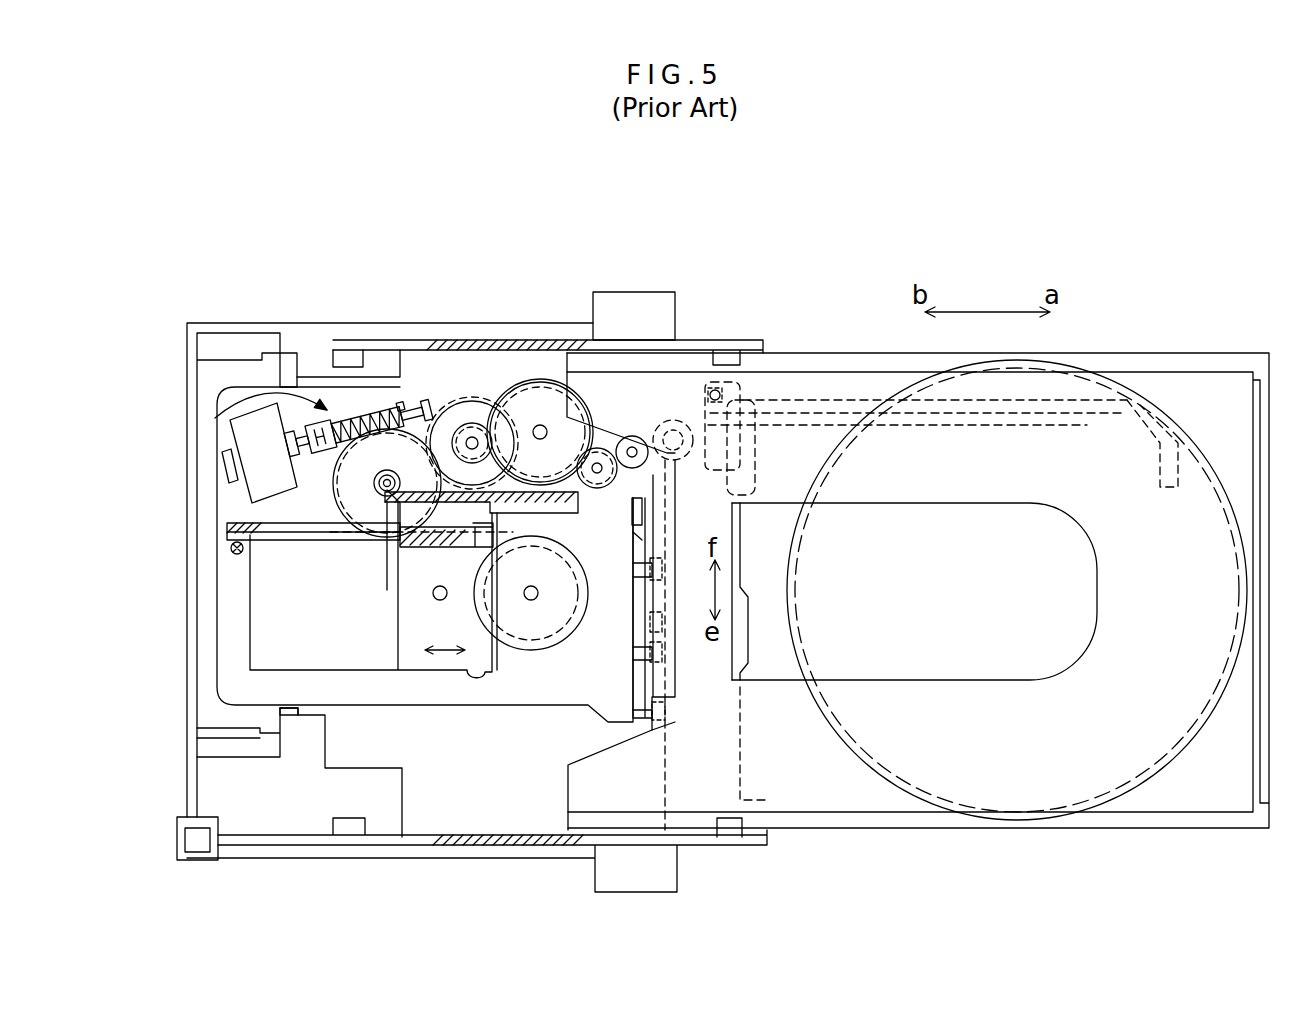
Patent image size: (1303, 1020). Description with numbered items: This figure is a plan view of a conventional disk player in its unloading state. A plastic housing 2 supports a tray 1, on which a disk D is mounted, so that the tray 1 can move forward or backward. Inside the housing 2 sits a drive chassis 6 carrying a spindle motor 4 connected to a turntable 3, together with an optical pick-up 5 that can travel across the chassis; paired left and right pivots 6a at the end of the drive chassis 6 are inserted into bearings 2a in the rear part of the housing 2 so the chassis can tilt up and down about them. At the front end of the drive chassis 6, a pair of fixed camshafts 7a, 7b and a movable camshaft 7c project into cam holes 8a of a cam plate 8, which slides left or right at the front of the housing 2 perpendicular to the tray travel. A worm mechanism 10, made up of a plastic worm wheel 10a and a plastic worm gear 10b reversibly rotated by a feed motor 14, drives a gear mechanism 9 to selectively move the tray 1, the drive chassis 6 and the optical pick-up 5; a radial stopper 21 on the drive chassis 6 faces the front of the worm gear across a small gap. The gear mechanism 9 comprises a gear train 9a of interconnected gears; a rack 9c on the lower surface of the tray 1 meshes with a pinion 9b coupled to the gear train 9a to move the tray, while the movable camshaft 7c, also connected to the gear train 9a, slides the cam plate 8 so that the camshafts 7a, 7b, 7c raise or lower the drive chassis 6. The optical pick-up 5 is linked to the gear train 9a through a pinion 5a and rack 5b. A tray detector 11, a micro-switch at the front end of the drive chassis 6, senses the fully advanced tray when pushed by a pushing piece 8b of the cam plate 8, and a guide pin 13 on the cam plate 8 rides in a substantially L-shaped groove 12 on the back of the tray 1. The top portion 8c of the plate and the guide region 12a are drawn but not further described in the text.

The tray 1 is at (818, 820).
The housing 2 is at (440, 855).
The bearings 2a is at (307, 353).
The turntable 3 is at (545, 648).
The spindle motor 4 is at (513, 622).
The optical pick-up 5 is at (398, 628).
The pinion 5a is at (370, 500).
The rack 5b is at (420, 495).
The drive chassis 6 is at (450, 697).
The pivots 6a is at (287, 367).
The fixed camshaft 7a is at (647, 720).
The fixed camshaft 7b is at (640, 578).
The movable camshaft 7c is at (645, 655).
The cam plate 8 is at (663, 670).
The cam holes 8a is at (652, 622).
The pushing piece 8b is at (695, 505).
The holder top portion 8c is at (634, 316).
The gear mechanism 9 is at (828, 240).
The gear train 9a is at (665, 430).
The pinion 9b is at (697, 400).
The rack 9c is at (796, 405).
The worm mechanism 10 is at (113, 385).
The worm wheel 10a is at (343, 493).
The worm gear 10b is at (245, 395).
The tray detector 11 is at (632, 527).
The groove 12 is at (1170, 490).
The guide portion 12a is at (916, 439).
The guide pin 13 is at (717, 388).
The feed motor 14 is at (257, 488).
The radial stopper 21 is at (412, 393).
The disk D is at (1020, 822).